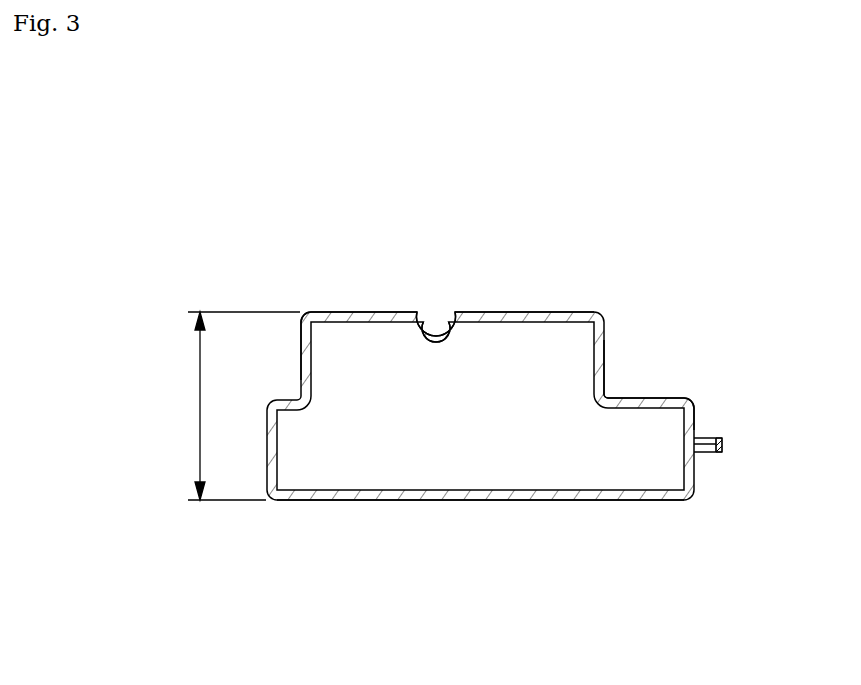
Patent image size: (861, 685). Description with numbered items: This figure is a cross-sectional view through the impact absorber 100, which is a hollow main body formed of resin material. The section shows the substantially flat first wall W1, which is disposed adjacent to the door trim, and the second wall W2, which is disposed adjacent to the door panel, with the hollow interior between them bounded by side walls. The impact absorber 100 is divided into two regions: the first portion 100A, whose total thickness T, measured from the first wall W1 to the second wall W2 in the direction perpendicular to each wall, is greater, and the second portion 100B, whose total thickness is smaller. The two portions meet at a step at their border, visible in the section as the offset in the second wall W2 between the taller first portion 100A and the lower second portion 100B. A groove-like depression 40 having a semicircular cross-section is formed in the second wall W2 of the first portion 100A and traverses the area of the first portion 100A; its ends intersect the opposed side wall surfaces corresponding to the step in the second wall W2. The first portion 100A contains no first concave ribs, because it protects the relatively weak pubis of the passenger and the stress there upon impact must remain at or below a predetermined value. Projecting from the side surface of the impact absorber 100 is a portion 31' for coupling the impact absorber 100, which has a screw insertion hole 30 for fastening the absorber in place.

The impact absorber 100 is at (292, 302).
The first portion 100A is at (371, 314).
The second portion 100B is at (644, 397).
The groove-like depression 40 is at (438, 330).
The screw insertion hole 30 is at (707, 453).
The portion for coupling the impact absorber 31' is at (740, 402).
The first wall W1 is at (475, 503).
The second wall W2 is at (530, 311).
The total thickness of the first portion T is at (237, 406).